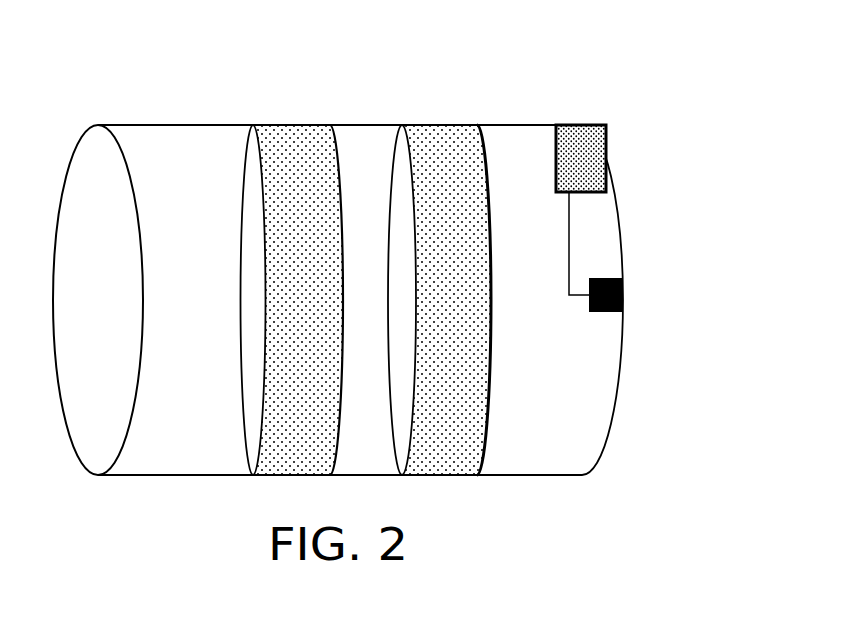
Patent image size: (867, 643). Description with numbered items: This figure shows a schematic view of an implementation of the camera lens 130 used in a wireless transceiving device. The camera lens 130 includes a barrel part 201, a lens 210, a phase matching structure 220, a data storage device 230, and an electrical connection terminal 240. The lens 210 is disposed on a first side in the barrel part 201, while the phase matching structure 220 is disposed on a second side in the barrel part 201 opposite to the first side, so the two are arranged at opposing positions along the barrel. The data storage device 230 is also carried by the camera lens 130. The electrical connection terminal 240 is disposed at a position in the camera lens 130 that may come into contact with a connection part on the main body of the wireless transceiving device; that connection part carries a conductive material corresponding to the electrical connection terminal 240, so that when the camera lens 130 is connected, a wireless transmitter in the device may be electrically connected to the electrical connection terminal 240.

The barrel part 201 is at (179, 125).
The lens 210 is at (292, 130).
The phase matching structure 220 is at (441, 130).
The data storage device 230 is at (583, 126).
The electrical connection terminal 240 is at (624, 295).
The camera lens 130 is at (743, 503).